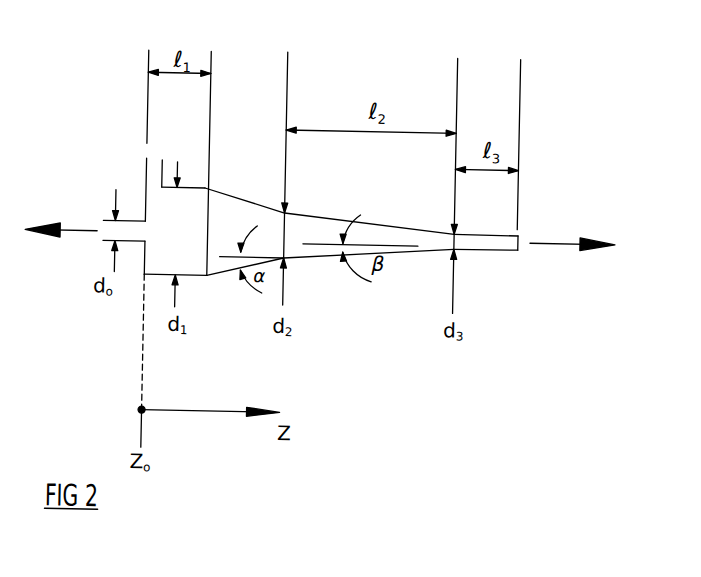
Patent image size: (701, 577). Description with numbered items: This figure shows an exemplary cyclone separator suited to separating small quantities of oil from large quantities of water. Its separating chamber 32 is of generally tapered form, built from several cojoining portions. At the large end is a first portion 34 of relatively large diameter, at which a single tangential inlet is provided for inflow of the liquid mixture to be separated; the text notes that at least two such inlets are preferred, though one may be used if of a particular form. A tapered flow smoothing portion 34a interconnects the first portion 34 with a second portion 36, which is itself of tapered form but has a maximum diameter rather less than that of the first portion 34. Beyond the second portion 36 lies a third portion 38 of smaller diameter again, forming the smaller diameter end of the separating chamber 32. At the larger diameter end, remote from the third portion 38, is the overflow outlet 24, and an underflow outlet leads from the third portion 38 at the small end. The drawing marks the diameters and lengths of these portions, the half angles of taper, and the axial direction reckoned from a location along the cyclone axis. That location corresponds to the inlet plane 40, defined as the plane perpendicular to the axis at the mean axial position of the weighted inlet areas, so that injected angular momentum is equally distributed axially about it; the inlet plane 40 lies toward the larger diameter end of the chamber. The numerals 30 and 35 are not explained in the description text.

The overflow outlet 24 is at (526, 227).
The inlet opening 30 is at (130, 248).
The separating chamber 32 is at (388, 235).
The first portion 34 is at (194, 267).
The tapered flow smoothing portion 34a is at (234, 198).
The inlet edge 35 is at (161, 162).
The second portion 36 is at (424, 253).
The third portion 38 is at (503, 247).
The inlet plane 40 is at (144, 200).